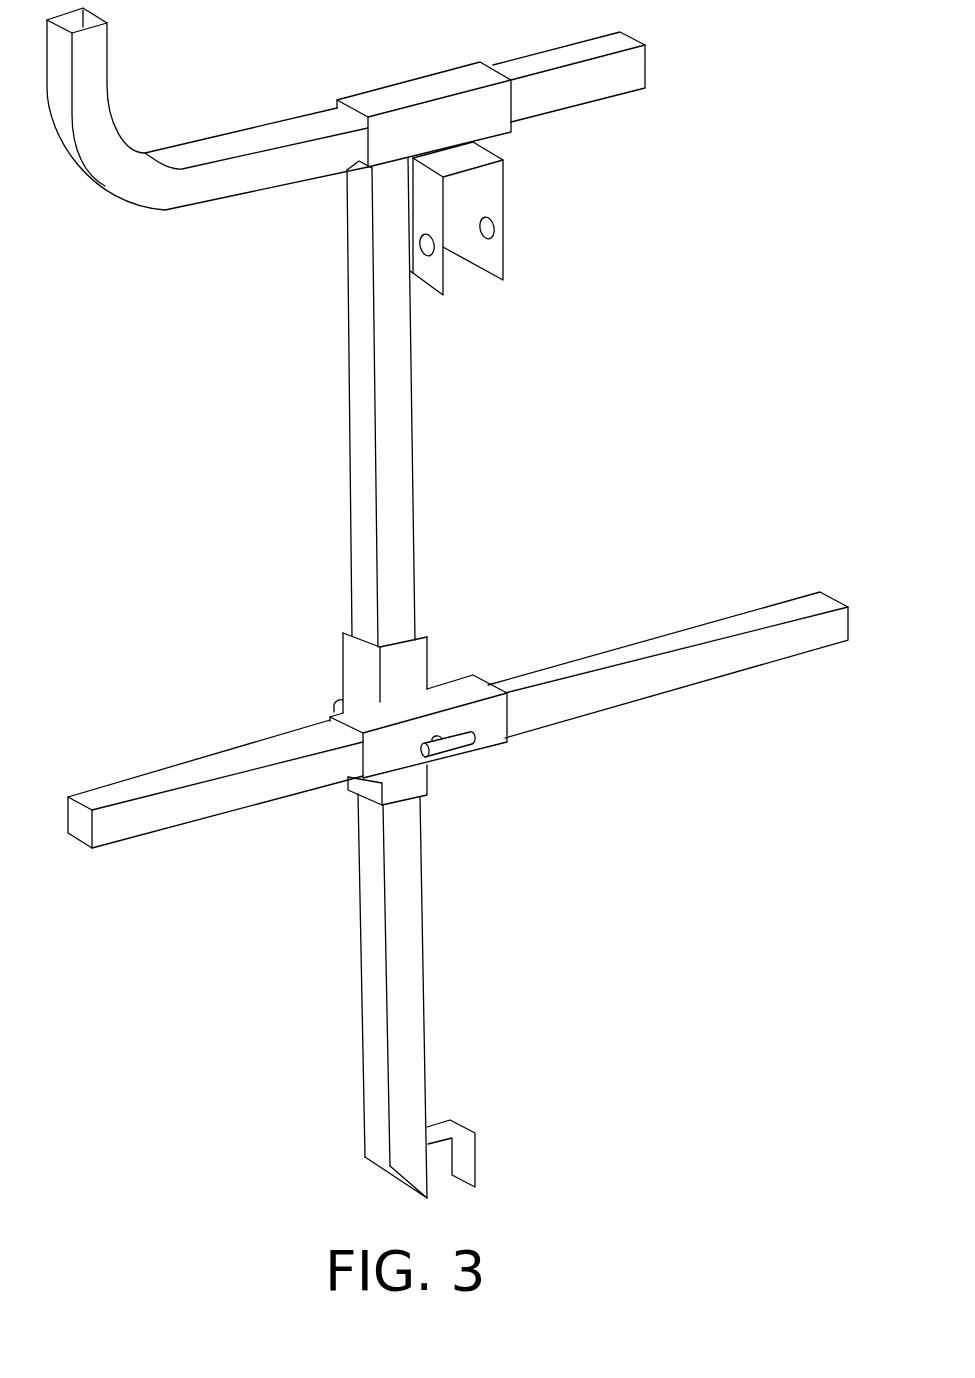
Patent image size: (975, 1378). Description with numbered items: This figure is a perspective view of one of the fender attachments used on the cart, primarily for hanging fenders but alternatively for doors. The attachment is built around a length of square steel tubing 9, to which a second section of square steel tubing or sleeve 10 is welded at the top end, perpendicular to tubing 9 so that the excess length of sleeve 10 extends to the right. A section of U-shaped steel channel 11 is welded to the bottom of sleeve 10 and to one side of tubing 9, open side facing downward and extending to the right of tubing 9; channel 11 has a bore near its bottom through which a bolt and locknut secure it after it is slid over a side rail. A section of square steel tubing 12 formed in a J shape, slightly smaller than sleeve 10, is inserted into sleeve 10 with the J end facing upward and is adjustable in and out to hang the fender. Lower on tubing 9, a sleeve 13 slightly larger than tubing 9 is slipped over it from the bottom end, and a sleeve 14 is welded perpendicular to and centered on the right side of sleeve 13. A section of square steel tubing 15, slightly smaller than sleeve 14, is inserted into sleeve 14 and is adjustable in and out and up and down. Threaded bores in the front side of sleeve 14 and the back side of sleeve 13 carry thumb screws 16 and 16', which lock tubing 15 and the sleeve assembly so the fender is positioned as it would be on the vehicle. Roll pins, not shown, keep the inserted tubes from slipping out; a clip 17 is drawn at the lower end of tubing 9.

The square steel tubing 9 is at (412, 440).
The sleeve 10 is at (418, 77).
The U-shaped steel channel 11 is at (505, 218).
The square steel tubing 12 is at (648, 75).
The sleeve 13 is at (427, 662).
The sleeve 14 is at (438, 763).
The square steel tubing 15 is at (705, 683).
The thumb screw 16 is at (488, 761).
The thumb screw 16' is at (302, 683).
The bottom clip 17 is at (477, 1158).